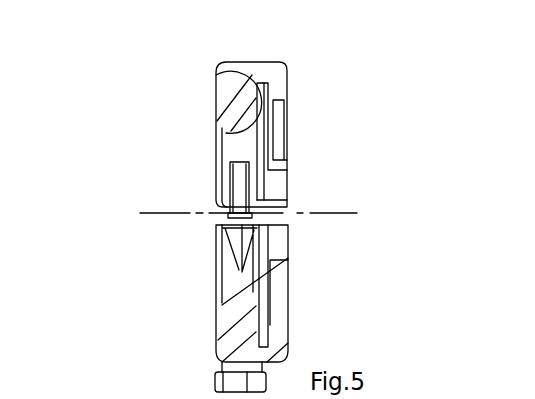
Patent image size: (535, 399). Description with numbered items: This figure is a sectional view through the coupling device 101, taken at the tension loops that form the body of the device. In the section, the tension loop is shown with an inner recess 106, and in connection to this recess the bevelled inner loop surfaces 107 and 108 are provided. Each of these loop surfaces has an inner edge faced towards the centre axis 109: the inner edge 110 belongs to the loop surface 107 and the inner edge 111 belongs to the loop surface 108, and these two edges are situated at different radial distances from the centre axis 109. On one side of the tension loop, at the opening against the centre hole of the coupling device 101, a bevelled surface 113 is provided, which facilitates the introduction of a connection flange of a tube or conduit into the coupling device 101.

The coupling device 101 is at (306, 128).
The inner recess 106 is at (270, 92).
The inner loop surface 107 is at (263, 91).
The inner loop surface 108 is at (216, 73).
The centre axis 109 is at (310, 212).
The inner edge 110 is at (272, 268).
The inner edge 111 is at (280, 316).
The bevelled surface 113 is at (237, 279).